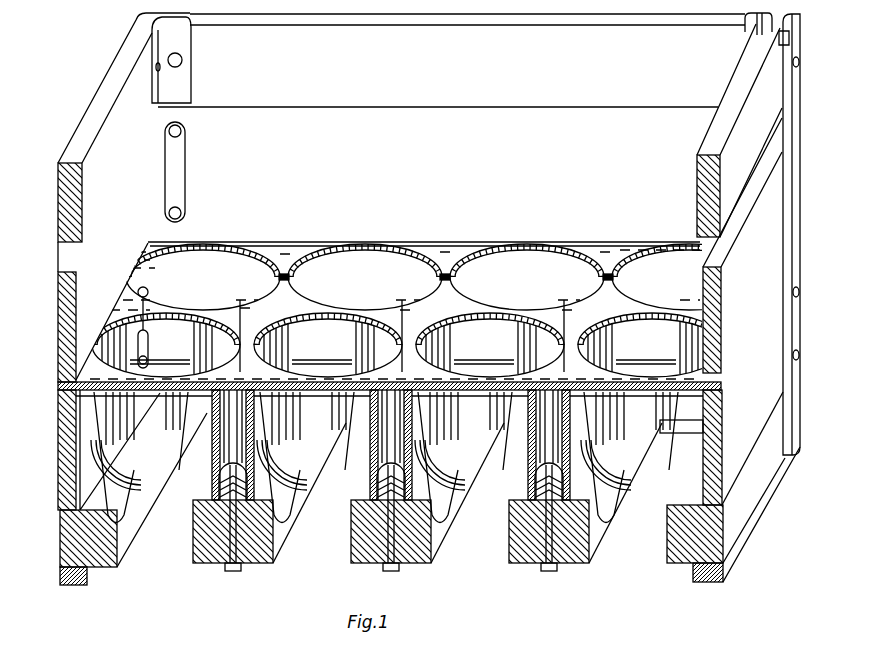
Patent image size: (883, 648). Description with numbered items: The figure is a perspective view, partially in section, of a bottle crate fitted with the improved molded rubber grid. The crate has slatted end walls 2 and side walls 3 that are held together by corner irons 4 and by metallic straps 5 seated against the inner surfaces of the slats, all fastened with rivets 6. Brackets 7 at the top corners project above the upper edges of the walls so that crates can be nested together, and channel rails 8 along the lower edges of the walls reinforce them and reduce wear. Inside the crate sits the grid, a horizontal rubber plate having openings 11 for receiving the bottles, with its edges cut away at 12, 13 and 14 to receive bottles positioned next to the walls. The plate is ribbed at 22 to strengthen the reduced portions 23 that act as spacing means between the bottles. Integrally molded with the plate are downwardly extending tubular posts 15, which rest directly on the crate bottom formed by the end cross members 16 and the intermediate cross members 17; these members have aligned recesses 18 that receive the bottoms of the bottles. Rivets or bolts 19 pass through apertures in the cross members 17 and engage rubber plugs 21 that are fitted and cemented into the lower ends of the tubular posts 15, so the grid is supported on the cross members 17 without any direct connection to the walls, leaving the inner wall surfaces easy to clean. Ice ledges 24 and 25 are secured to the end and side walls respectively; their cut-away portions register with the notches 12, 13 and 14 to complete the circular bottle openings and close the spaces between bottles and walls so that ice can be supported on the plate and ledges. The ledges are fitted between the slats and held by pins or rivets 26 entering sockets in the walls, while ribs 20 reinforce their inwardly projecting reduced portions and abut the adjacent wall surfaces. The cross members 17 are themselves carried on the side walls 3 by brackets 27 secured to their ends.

The end walls 2 is at (98, 93).
The side walls 3 is at (707, 75).
The corner irons 4 is at (797, 150).
The metallic straps 5 is at (180, 183).
The rivets 6 is at (181, 137).
The brackets 7 is at (152, 22).
The channel rails 8 is at (80, 585).
The openings 11 is at (391, 343).
The cut-away portion 12 is at (613, 357).
The cut-away portion 13 is at (238, 300).
The cut-away portion 14 is at (391, 302).
The tubular posts 15 is at (287, 358).
The end cross members 16 is at (107, 560).
The cross members 17 is at (258, 557).
The recesses 18 is at (167, 443).
The rivets or bolts 19 is at (232, 543).
The ribs 20 is at (76, 424).
The plugs 21 is at (217, 479).
The ribs 22 is at (310, 400).
The reduced portions 23 is at (247, 348).
The ice ledge 24 is at (77, 448).
The ice ledge 25 is at (330, 237).
The pins or rivets 26 is at (62, 384).
The brackets 27 is at (363, 443).